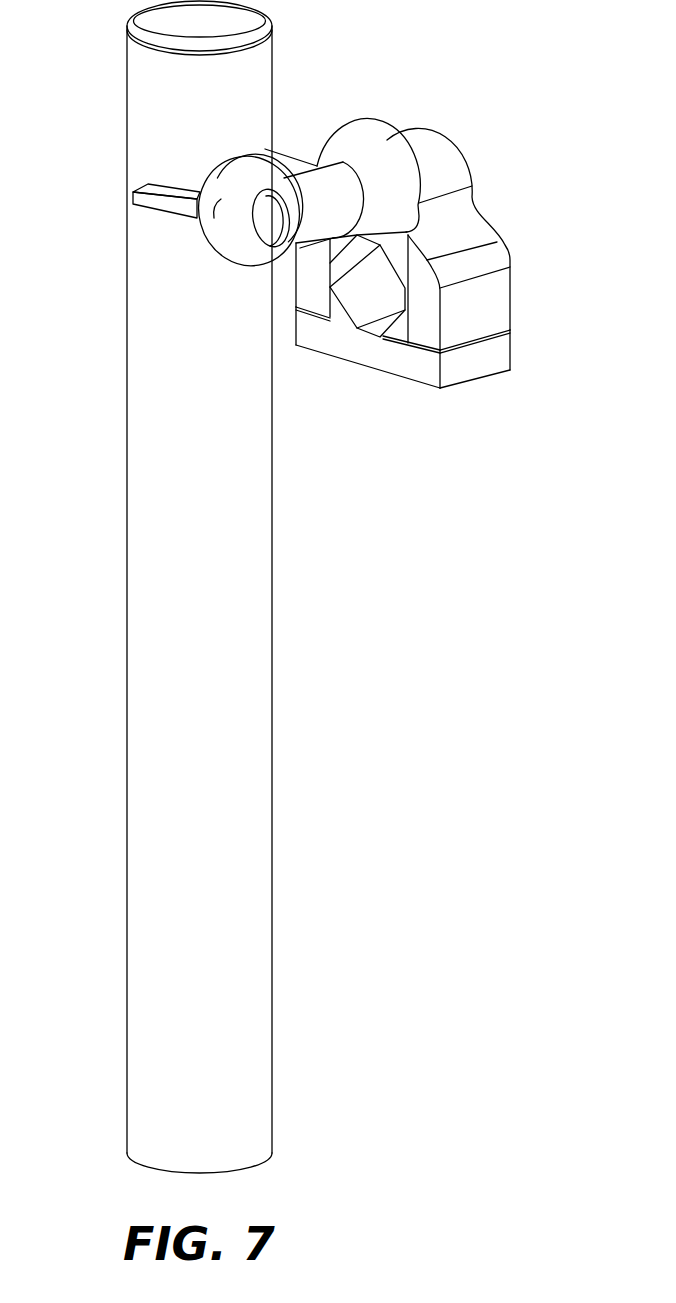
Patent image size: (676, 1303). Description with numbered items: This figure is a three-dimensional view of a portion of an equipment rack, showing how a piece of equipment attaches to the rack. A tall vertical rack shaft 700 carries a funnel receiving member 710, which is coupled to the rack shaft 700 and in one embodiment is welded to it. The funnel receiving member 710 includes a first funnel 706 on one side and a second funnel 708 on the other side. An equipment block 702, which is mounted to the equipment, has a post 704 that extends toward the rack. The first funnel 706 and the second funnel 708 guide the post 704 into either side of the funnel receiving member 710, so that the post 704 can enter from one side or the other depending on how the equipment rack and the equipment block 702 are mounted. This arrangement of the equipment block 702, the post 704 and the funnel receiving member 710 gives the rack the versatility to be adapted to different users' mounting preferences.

The rack shaft 700 is at (273, 478).
The equipment block 702 is at (497, 294).
The post 704 is at (273, 228).
The first funnel 706 is at (372, 158).
The second funnel 708 is at (203, 233).
The funnel receiving member 710 is at (302, 183).